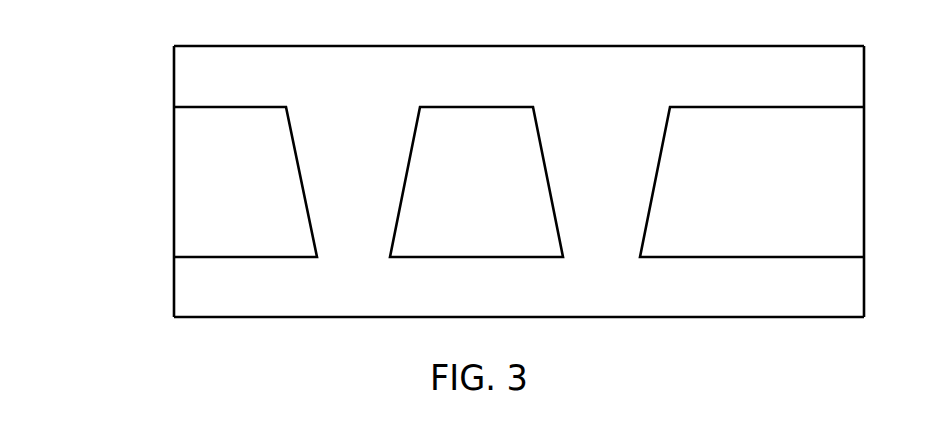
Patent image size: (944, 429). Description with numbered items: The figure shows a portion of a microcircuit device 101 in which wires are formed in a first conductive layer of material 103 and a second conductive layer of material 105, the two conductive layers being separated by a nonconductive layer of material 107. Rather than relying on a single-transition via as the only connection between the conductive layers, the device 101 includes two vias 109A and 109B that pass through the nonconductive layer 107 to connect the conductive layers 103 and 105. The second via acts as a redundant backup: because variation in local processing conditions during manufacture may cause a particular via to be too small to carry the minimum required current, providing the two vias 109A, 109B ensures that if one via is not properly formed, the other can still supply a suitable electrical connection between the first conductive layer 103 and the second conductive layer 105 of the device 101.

The microcircuit device 101 is at (160, 156).
The first conductive layer of material 103 is at (780, 82).
The second conductive layer of material 105 is at (785, 299).
The nonconductive layer of material 107 is at (255, 194).
The via 109A is at (378, 194).
The via 109B is at (632, 194).